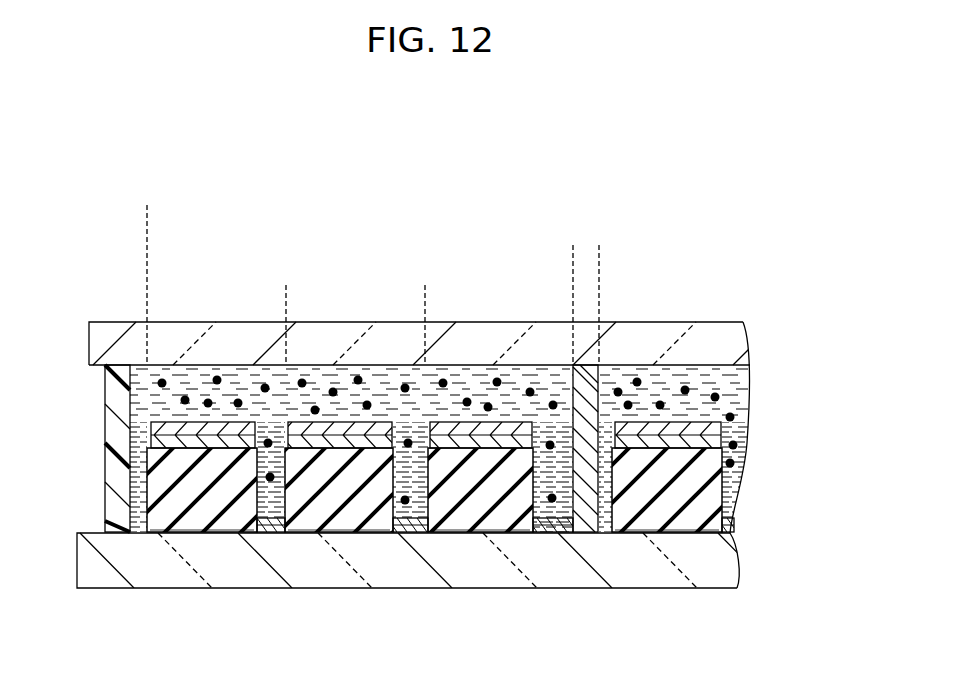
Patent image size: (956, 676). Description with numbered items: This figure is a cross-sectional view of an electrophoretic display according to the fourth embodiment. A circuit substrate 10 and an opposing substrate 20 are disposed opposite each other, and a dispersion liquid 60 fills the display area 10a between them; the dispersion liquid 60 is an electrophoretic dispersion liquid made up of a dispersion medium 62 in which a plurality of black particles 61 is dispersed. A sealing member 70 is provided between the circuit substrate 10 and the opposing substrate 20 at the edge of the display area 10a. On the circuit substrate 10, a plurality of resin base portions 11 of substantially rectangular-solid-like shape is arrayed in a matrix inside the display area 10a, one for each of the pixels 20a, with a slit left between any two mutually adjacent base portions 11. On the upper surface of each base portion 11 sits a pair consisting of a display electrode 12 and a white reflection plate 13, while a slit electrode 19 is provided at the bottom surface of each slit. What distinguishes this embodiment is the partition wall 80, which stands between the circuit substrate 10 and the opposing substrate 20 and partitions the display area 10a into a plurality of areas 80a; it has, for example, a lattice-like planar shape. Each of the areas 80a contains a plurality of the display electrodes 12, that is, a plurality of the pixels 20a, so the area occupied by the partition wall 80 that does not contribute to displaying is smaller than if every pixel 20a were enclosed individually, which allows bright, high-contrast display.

The circuit substrate 10 is at (723, 567).
The base portion 11 is at (309, 525).
The display electrode 12 is at (348, 450).
The white reflection plate 13 is at (375, 424).
The slit electrode 19 is at (404, 526).
The opposing substrate 20 is at (740, 339).
The dispersion liquid 60 is at (489, 448).
The black particles 61 is at (745, 397).
The dispersion medium 62 is at (742, 419).
The sealing member 70 is at (107, 458).
The partition wall 80 is at (580, 535).
The display area 10a is at (742, 232).
The area 80a is at (733, 271).
The pixel 20a is at (299, 297).